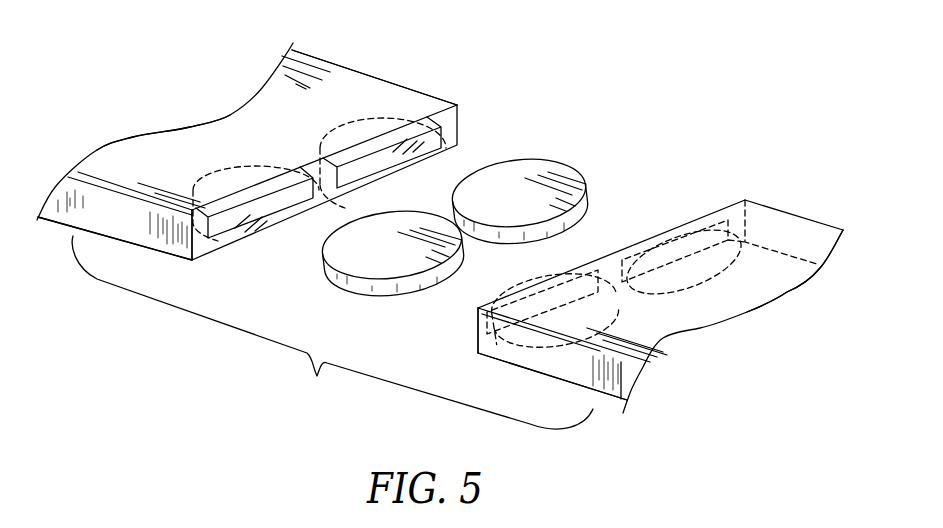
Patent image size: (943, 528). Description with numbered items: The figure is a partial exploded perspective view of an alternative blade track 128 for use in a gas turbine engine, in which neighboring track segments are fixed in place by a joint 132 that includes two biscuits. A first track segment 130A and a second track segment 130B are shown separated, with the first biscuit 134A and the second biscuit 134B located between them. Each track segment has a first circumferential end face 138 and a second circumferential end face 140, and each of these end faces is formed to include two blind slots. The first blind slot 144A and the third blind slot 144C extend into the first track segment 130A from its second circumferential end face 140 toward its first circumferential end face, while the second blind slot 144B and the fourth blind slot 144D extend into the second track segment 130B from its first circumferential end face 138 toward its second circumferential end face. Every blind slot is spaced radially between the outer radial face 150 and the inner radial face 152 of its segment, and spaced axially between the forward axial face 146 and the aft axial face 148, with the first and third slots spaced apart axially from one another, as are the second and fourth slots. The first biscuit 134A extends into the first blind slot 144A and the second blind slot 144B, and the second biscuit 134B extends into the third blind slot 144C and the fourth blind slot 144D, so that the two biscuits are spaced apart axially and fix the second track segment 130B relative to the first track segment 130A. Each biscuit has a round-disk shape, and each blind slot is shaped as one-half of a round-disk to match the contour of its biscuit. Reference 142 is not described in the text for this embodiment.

The blade track 128 is at (700, 86).
The first track segment 130A is at (313, 75).
The second track segment 130B is at (780, 223).
The joint 132 is at (455, 199).
The first biscuit 134A is at (391, 270).
The second biscuit 134B is at (507, 178).
The first circumferential end face 138 is at (478, 348).
The second circumferential end face 140 is at (200, 248).
The flexible sheet 142 is at (137, 147).
The first blind slot 144A is at (266, 206).
The second blind slot 144B is at (561, 321).
The third blind slot 144C is at (439, 148).
The fourth blind slot 144D is at (689, 269).
The forward axial face 146 is at (112, 220).
The aft axial face 148 is at (376, 103).
The outer radial face 150 is at (193, 134).
The inner radial face 152 is at (124, 227).